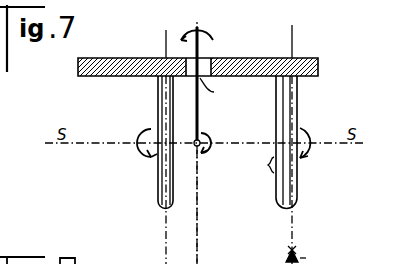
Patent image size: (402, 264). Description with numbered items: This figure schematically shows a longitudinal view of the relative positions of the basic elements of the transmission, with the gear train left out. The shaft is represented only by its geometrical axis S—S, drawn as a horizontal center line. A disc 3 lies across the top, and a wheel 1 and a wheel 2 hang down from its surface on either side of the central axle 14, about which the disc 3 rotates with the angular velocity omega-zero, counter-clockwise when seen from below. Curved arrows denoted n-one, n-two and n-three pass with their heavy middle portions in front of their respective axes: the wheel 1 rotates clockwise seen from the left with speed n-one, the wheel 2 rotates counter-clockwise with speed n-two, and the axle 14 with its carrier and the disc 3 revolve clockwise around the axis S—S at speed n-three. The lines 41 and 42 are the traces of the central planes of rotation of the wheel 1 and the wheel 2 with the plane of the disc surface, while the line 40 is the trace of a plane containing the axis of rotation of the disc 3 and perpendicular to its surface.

The wheel 1 is at (303, 117).
The wheel 2 is at (157, 172).
The disc 3 is at (308, 58).
The axle 14 is at (200, 100).
The line 40 is at (198, 248).
The line 41 is at (294, 232).
The line 42 is at (165, 246).